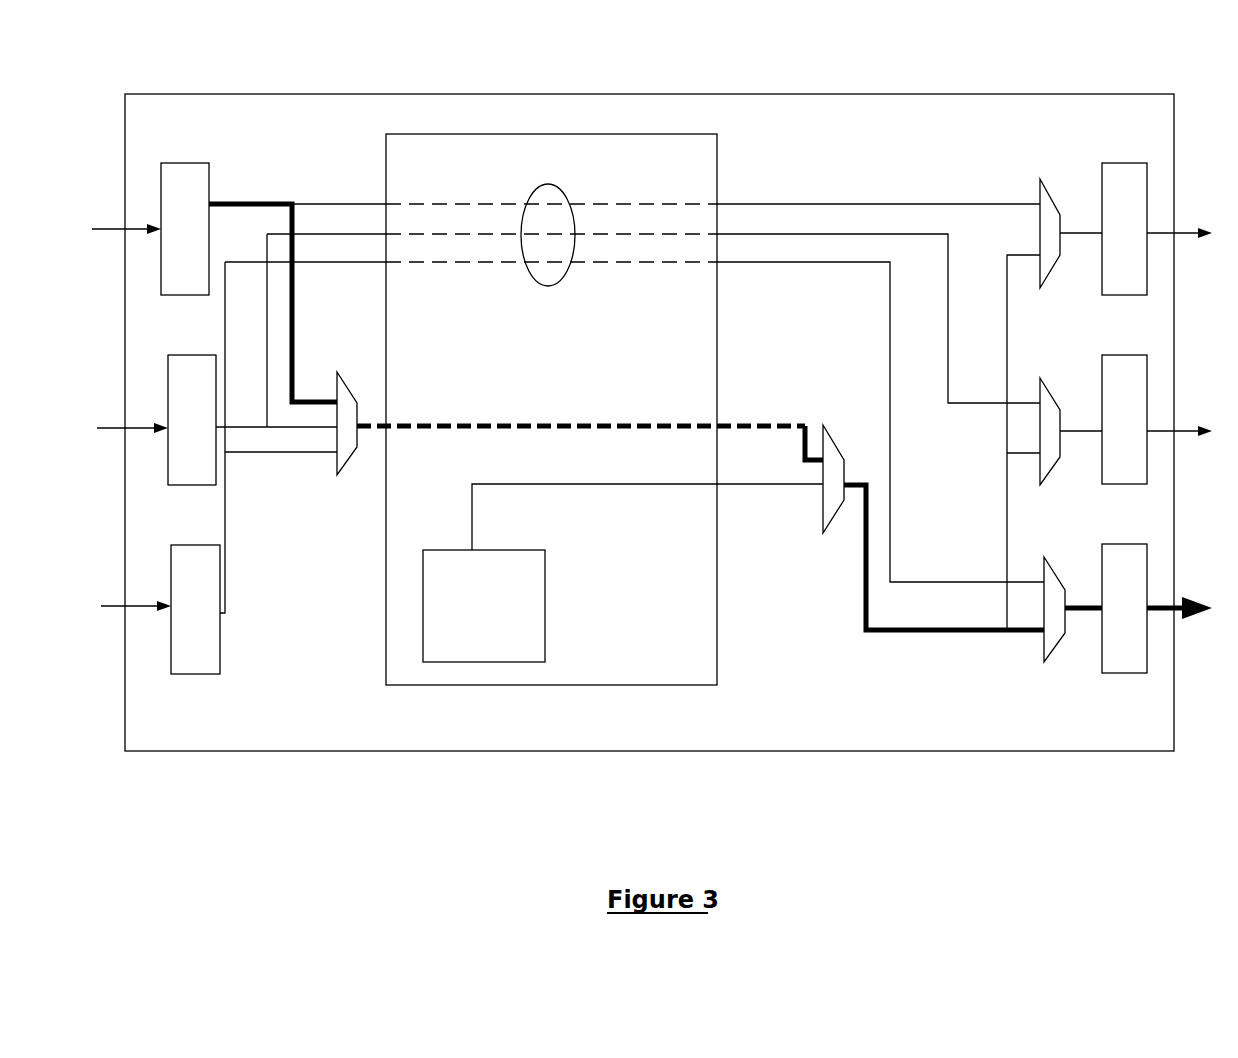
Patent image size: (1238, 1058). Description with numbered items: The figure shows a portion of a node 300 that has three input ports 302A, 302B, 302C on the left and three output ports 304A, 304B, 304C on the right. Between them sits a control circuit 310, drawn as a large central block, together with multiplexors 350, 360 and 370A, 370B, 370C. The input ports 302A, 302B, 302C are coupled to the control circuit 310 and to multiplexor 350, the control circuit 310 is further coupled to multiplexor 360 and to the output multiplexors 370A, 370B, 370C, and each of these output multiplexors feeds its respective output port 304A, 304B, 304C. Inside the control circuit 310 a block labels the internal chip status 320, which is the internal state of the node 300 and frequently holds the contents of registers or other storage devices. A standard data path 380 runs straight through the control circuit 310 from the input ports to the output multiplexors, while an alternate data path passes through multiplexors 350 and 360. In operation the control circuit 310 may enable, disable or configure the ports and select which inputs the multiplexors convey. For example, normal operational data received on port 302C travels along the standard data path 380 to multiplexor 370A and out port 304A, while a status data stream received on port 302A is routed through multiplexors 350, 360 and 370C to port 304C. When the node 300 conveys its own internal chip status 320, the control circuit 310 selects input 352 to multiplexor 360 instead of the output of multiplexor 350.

The node 300 is at (677, 72).
The input port 302A is at (185, 229).
The input port 302B is at (192, 420).
The input port 302C is at (195, 609).
The output port 304A is at (1124, 229).
The output port 304B is at (1124, 419).
The output port 304C is at (1124, 608).
The control circuit 310 is at (575, 168).
The internal chip status 320 is at (465, 655).
The multiplexor 350 is at (342, 470).
The input 352 is at (492, 485).
The multiplexor 360 is at (824, 533).
The multiplexor 370A is at (1047, 185).
The multiplexor 370B is at (1045, 382).
The multiplexor 370C is at (1055, 565).
The standard data path 380 is at (547, 287).